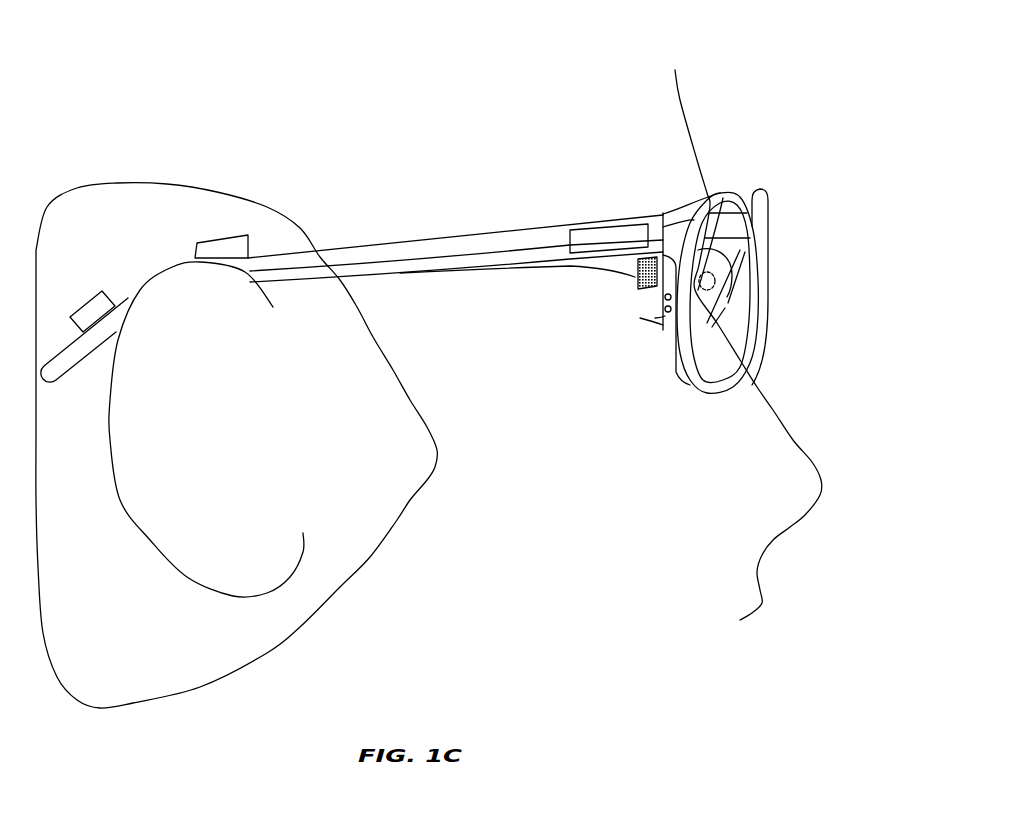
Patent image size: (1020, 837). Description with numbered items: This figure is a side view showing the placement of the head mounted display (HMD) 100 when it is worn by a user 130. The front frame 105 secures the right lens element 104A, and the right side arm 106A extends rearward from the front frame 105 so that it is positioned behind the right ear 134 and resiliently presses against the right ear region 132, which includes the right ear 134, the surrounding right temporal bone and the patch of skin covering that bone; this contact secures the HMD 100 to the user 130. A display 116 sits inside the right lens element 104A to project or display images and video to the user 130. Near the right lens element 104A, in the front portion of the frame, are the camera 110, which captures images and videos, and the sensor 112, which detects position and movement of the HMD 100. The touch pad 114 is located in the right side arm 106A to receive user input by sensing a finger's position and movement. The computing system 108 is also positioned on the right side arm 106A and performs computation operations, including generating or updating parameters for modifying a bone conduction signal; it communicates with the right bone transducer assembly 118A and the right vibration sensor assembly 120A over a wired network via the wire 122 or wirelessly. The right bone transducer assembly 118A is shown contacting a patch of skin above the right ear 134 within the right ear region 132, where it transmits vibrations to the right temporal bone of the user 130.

The head mounted display (HMD) 100 is at (535, 212).
The right lens element 104A is at (713, 367).
The front frame 105 is at (748, 303).
The right side arm 106A is at (75, 363).
The computing system 108 is at (610, 228).
The camera 110 is at (655, 318).
The sensor 112 is at (665, 308).
The touch pad 114 is at (636, 279).
The display 116 is at (727, 215).
The right bone transducer assembly 118A is at (219, 240).
The right vibration sensor assembly 120A is at (89, 297).
The wire 122 is at (380, 260).
The user 130 is at (667, 93).
The right ear region 132 is at (355, 495).
The right ear 134 is at (204, 427).